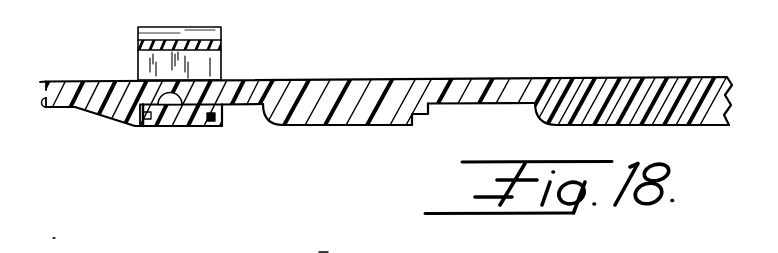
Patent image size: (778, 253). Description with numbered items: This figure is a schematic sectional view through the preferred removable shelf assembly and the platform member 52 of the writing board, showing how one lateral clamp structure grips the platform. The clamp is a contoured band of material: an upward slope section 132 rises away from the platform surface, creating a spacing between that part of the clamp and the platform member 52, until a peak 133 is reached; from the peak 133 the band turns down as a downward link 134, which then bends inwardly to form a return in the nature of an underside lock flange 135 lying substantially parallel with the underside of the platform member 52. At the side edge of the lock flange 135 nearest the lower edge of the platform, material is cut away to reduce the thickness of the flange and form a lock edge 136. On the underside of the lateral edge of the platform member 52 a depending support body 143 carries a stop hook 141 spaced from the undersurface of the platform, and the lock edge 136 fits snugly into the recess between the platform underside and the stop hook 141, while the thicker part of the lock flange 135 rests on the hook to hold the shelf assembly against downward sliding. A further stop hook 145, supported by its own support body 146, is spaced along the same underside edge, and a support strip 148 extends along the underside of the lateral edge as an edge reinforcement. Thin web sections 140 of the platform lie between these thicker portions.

The platform member 52 is at (473, 78).
The upward slope section 132 is at (222, 32).
The peak 133 is at (138, 27).
The downward link 134 is at (203, 65).
The lock flange 135 is at (210, 128).
The lock edge 136 is at (187, 127).
The thin web section 140 is at (248, 105).
The stop hook 141 is at (144, 128).
The support body 143 is at (110, 123).
The stop hook 145 is at (430, 117).
The support body 146 is at (358, 118).
The support strip 148 is at (650, 115).